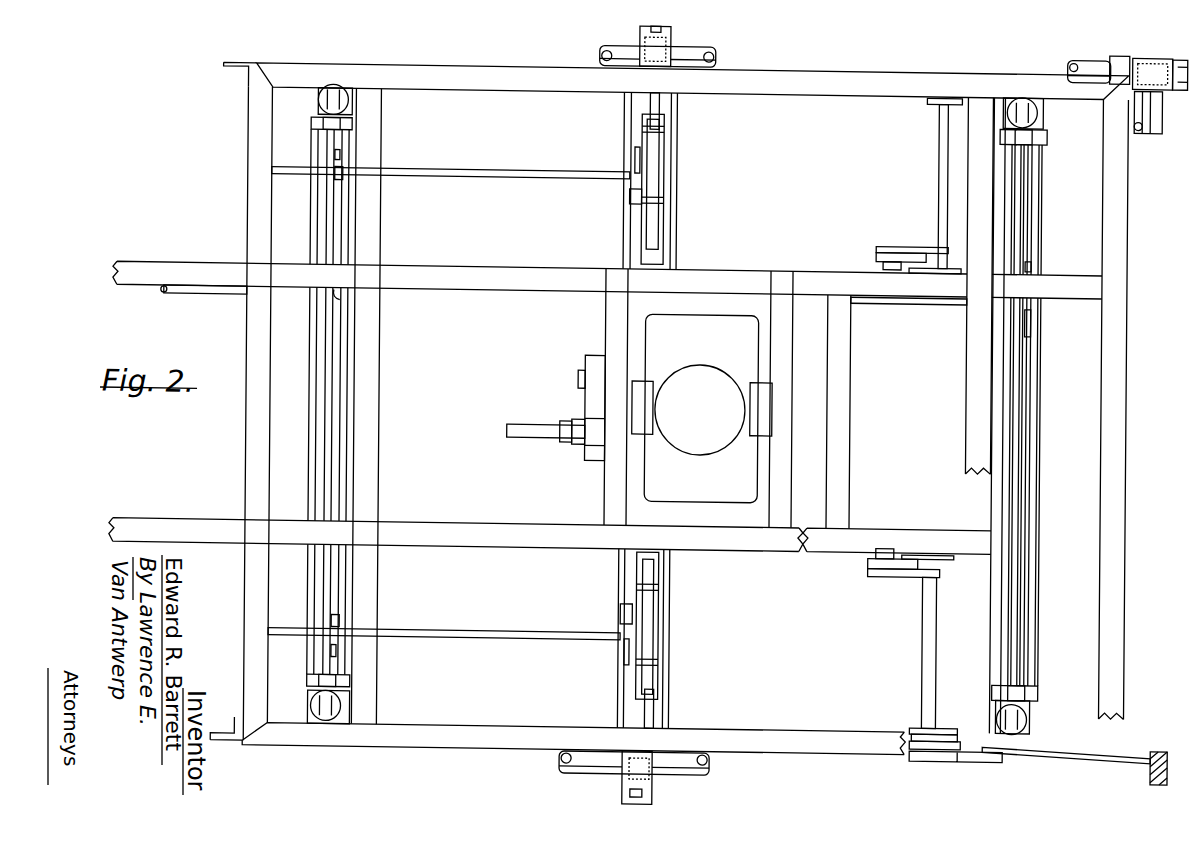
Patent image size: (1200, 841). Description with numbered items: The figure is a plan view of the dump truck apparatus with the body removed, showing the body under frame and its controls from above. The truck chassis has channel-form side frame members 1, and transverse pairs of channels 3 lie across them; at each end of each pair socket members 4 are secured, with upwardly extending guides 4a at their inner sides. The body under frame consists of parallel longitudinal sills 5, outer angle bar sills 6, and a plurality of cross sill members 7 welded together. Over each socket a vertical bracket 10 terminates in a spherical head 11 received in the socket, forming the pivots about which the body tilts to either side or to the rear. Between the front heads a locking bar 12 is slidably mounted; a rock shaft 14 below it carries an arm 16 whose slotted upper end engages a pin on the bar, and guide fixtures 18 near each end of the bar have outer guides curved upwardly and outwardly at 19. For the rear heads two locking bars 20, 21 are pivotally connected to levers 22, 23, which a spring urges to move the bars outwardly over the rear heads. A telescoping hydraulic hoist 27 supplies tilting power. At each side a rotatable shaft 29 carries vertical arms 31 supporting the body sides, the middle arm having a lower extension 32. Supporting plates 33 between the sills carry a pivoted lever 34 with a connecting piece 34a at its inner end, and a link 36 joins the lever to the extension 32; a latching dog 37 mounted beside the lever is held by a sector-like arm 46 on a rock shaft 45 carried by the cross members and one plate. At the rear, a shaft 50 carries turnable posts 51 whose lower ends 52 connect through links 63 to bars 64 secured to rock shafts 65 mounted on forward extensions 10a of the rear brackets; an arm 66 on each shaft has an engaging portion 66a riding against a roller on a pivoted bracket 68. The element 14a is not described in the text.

The side chassis frame member 1 is at (137, 289).
The transverse pair of channels 3 is at (312, 446).
The socket member 4 is at (343, 130).
The upwardly extending guide 4a is at (318, 133).
The longitudinal sill 5 is at (483, 275).
The angle bar sill 6 is at (797, 95).
The cross sill member 7 is at (1110, 166).
The vertical bracket 10 is at (346, 110).
The forward extension of bracket 10a is at (936, 109).
The spherical head 11 is at (338, 100).
The locking bar 12 is at (327, 494).
The rock shaft 14 is at (195, 302).
The block 14a is at (1030, 133).
The arm 16 is at (338, 305).
The guide fixture 18 is at (341, 183).
The curved guide portion 19 is at (340, 162).
The rear locking bar 20 is at (1020, 225).
The rear locking bar 21 is at (1018, 512).
The lever 22 is at (1031, 265).
The lever 23 is at (1030, 315).
The telescoping hydraulic hoist 27 is at (733, 374).
The rotatable shaft 29 is at (700, 56).
The vertical arm 31 is at (636, 43).
The lower extension 32 is at (665, 38).
The supporting plate 33 is at (676, 160).
The lever 34 is at (642, 216).
The connecting piece 34a is at (652, 247).
The link 36 is at (657, 106).
The latching dog 37 is at (628, 199).
The rock shaft 45 is at (523, 176).
The sector-like arm 46 is at (631, 162).
The shaft 50 is at (1153, 113).
The vertical post 51 is at (1138, 48).
The lower end of post 52 is at (1158, 775).
The link 63 is at (1097, 760).
The bar 64 is at (957, 751).
The rock shaft 65 is at (935, 172).
The arm 66 is at (902, 247).
The engaging portion 66a is at (877, 255).
The bracket 68 is at (894, 271).